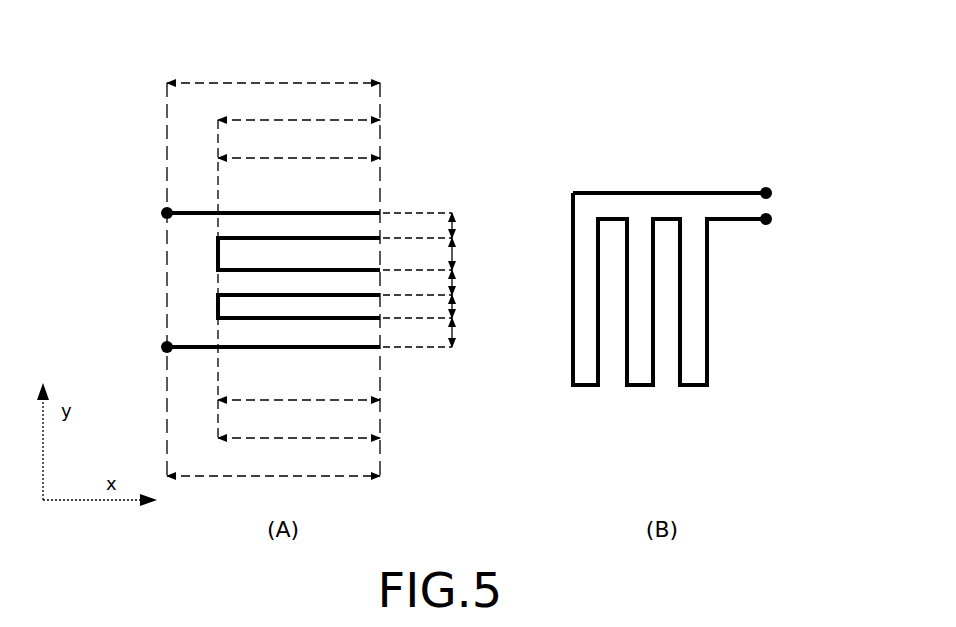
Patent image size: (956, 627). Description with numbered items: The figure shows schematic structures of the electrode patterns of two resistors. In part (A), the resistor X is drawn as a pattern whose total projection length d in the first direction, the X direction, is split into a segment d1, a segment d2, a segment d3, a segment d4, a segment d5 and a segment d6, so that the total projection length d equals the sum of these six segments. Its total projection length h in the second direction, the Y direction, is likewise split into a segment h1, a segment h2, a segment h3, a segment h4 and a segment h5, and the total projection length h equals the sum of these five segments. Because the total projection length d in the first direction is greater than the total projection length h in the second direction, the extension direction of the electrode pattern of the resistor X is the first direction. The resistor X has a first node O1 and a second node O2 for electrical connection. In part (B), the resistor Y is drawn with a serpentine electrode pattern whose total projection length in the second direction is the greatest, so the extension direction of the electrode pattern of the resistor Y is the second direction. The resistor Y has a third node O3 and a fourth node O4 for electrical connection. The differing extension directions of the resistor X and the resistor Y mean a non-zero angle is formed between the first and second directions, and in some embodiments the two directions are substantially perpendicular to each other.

The first node O1 is at (162, 208).
The second node O2 is at (160, 350).
The third node O3 is at (770, 190).
The fourth node O4 is at (770, 222).
The resistor X is at (215, 262).
The resistor Y is at (648, 190).
The segment d1 is at (273, 70).
The segment d2 is at (299, 107).
The segment d3 is at (299, 145).
The segment d4 is at (299, 387).
The segment d5 is at (299, 425).
The segment d6 is at (273, 463).
The segment h1 is at (466, 225).
The segment h2 is at (466, 254).
The segment h3 is at (466, 282).
The segment h4 is at (466, 307).
The segment h5 is at (466, 332).